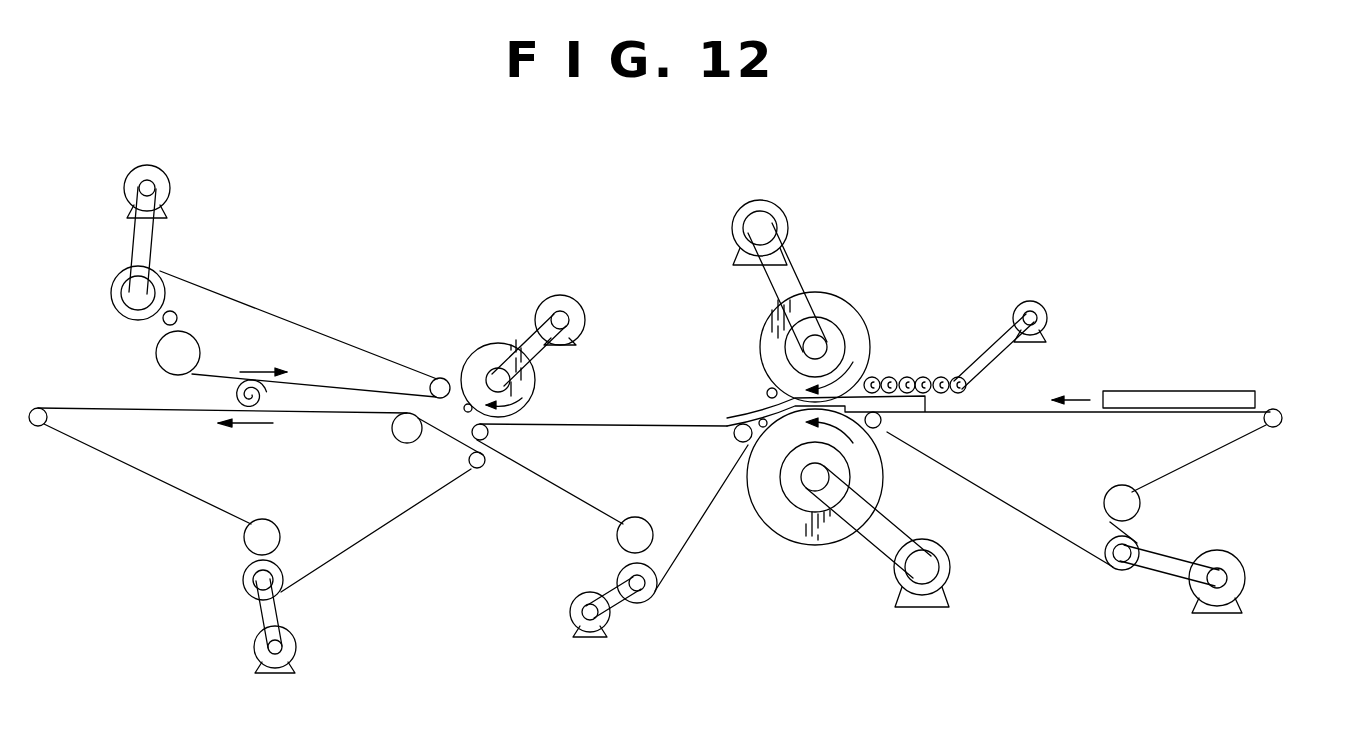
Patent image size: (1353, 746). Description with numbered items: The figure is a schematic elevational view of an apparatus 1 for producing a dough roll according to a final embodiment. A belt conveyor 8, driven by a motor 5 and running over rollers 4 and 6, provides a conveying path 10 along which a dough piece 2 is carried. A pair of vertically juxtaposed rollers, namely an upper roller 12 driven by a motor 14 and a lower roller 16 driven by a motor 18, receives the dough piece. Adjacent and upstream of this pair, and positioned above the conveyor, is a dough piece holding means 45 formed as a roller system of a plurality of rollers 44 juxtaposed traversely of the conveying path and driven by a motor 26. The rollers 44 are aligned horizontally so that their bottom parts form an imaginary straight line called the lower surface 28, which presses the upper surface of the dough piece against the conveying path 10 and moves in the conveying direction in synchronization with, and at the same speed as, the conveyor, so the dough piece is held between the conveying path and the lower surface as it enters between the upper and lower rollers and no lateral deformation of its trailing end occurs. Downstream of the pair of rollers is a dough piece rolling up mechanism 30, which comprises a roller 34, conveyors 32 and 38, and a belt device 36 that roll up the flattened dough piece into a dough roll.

The apparatus 1 is at (668, 213).
The dough piece 2 is at (1187, 393).
The roller 4 is at (1285, 418).
The motor 5 is at (1245, 572).
The roller 6 is at (883, 423).
The belt conveyor 8 is at (1233, 447).
The conveying path 10 is at (1023, 404).
The upper roller 12 is at (870, 310).
The motor 14 is at (782, 210).
The lower roller 16 is at (810, 543).
The motor 18 is at (953, 600).
The motor 26 is at (1047, 310).
The lower surface 28 is at (948, 400).
The dough piece rolling up mechanism 30 is at (560, 231).
The conveyor 32 is at (677, 560).
The roller 34 is at (468, 362).
The belt device 36 is at (287, 317).
The conveyor 38 is at (358, 548).
The rollers 44 is at (878, 378).
The dough piece holding means 45 is at (918, 334).